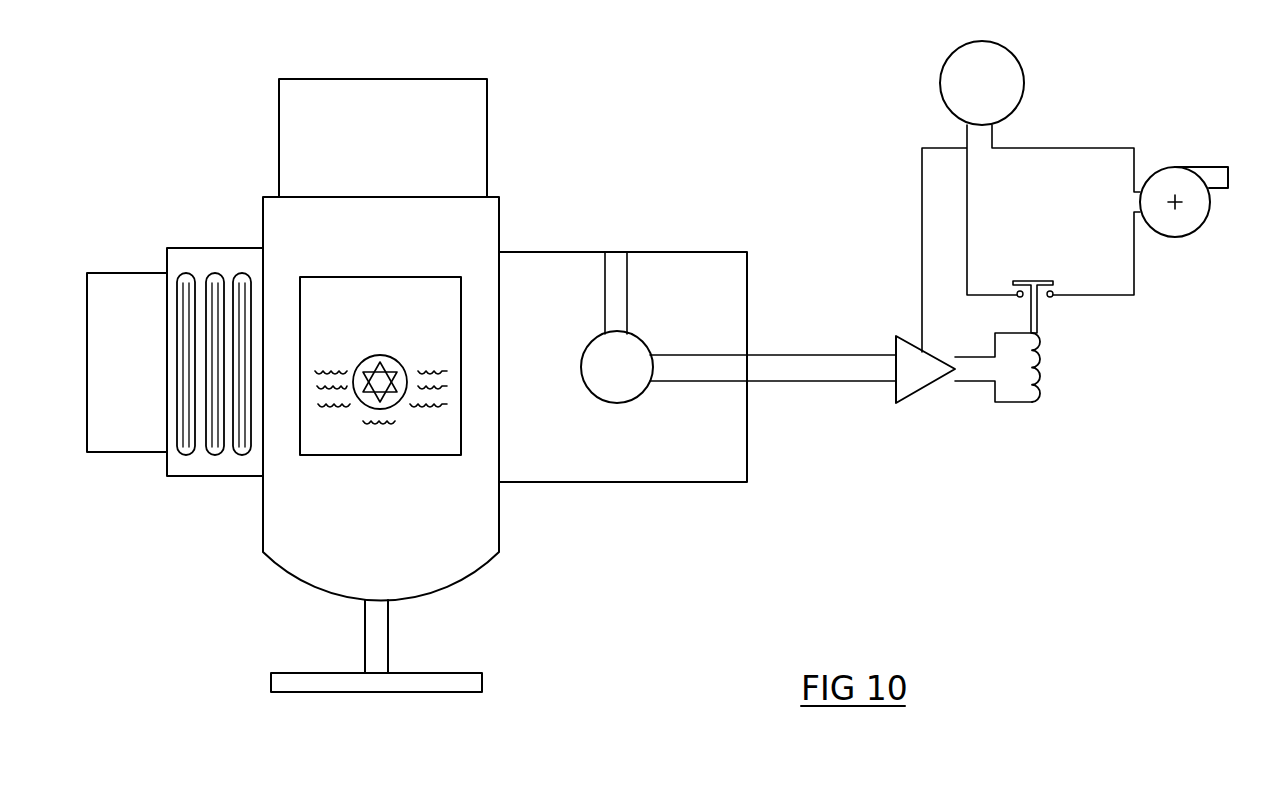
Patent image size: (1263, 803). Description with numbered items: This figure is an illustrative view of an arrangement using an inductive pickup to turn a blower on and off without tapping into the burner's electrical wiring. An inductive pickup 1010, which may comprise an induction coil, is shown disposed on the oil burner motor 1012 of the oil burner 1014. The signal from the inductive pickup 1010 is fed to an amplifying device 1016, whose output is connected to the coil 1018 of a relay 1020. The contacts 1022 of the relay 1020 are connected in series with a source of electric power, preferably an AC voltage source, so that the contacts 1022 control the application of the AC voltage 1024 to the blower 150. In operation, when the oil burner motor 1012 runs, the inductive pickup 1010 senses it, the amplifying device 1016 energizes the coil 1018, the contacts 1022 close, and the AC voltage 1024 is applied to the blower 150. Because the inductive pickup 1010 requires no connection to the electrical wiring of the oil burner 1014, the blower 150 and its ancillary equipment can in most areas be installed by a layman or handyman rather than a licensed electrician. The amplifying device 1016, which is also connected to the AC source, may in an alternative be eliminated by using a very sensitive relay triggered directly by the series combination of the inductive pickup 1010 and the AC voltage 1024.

The inductive pickup 1010 is at (643, 392).
The oil burner motor 1012 is at (747, 465).
The oil burner 1014 is at (499, 241).
The amplifying device 1016 is at (916, 396).
The coil 1018 is at (1046, 375).
The relay 1020 is at (1192, 334).
The contacts 1022 is at (1036, 278).
The AC voltage 1024 is at (1024, 88).
The blower 150 is at (1160, 233).